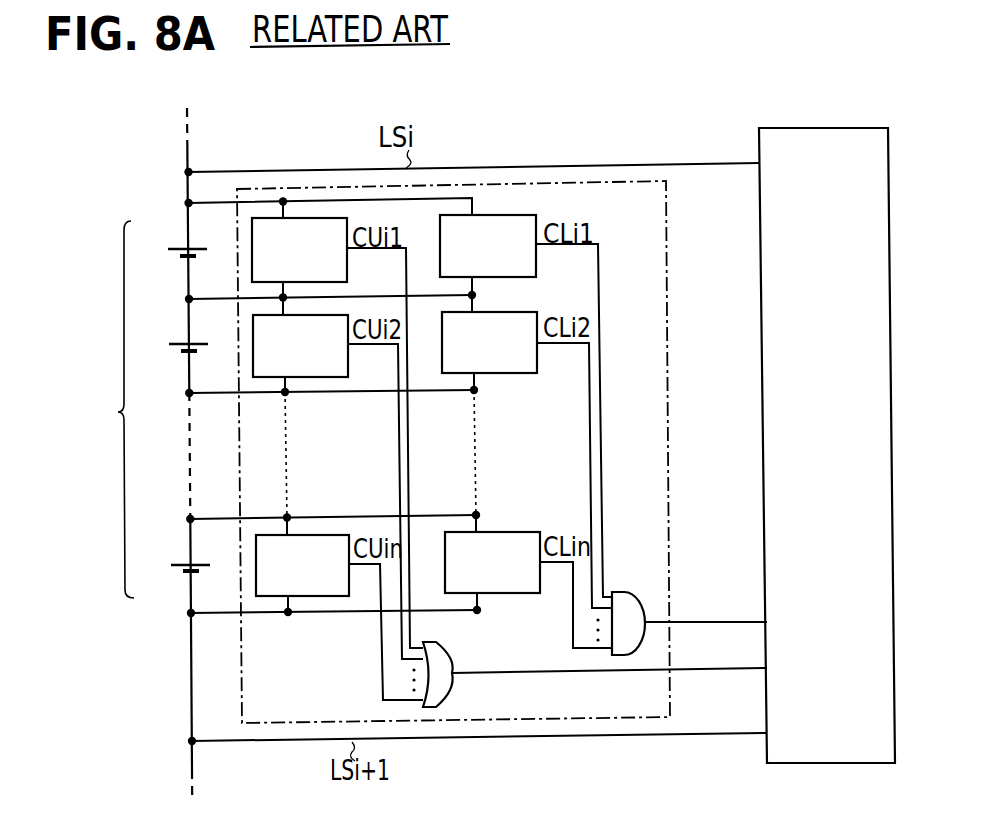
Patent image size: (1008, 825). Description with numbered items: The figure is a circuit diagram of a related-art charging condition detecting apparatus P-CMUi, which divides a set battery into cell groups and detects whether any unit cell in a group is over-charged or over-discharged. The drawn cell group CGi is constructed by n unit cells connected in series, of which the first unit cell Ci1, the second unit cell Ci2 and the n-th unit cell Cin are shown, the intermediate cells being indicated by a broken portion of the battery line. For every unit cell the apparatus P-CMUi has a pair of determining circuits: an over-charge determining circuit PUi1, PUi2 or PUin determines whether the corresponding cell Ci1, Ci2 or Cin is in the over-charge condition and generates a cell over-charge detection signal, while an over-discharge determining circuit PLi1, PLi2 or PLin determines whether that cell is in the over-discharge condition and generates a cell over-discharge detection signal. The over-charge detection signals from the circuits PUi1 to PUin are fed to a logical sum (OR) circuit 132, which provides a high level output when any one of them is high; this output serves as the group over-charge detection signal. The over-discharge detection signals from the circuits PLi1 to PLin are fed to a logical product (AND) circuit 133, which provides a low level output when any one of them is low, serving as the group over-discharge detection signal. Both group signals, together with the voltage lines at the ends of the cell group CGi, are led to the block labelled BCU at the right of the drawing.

The logical sum (OR) circuit 132 is at (440, 646).
The logical product (AND) circuit 133 is at (638, 593).
The battery control unit BCU is at (827, 445).
The cell group CGi is at (145, 409).
The unit cell Ci1 is at (174, 239).
The unit cell Ci2 is at (174, 334).
The unit cell Cin is at (178, 554).
The over-charge determining circuit PUi1 is at (299, 250).
The over-discharge determining circuit PLi1 is at (488, 246).
The over-charge determining circuit PUi2 is at (300, 346).
The over-discharge determining circuit PLi2 is at (489, 342).
The over-charge determining circuit PUin is at (302, 565).
The over-discharge determining circuit PLin is at (492, 562).
The charging condition detecting apparatus P-CMUi is at (453, 452).